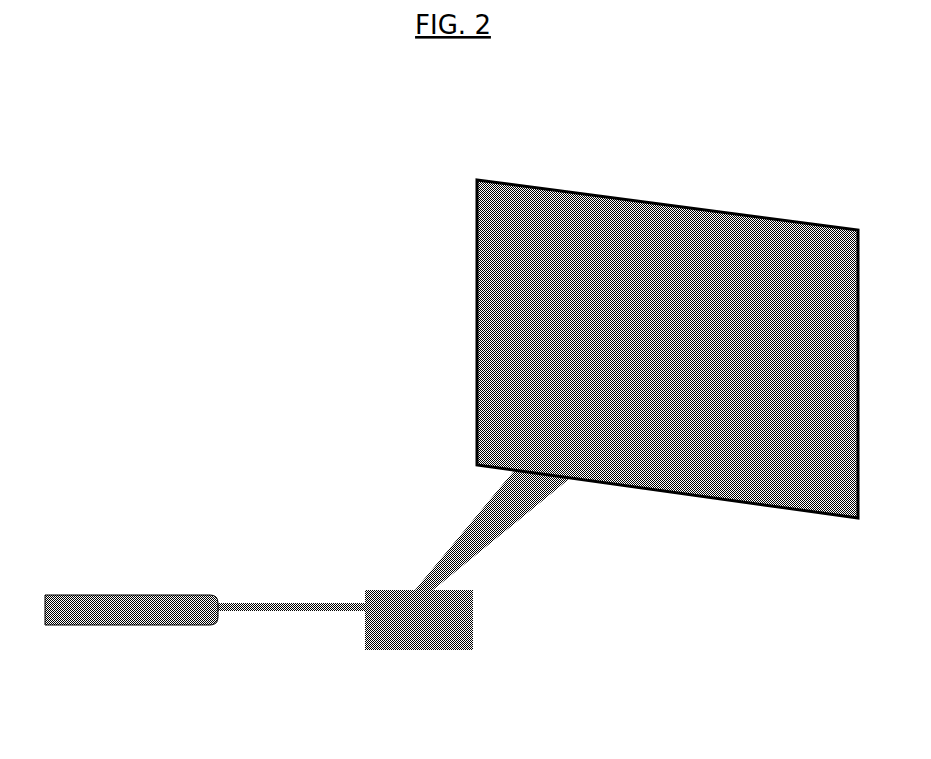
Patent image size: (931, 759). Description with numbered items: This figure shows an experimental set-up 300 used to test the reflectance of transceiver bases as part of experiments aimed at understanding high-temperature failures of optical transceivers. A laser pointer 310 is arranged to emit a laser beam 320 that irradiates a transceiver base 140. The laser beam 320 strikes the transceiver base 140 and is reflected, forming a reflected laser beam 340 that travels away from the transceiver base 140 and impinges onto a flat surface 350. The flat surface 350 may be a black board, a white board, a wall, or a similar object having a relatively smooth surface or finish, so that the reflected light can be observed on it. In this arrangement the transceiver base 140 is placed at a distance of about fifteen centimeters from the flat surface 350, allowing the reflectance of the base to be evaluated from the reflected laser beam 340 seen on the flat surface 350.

The experimental set-up 300 is at (437, 152).
The flat surface 350 is at (477, 345).
The reflected laser beam 340 is at (462, 530).
The laser pointer 310 is at (167, 598).
The laser beam 320 is at (300, 603).
The transceiver base 140 is at (473, 630).